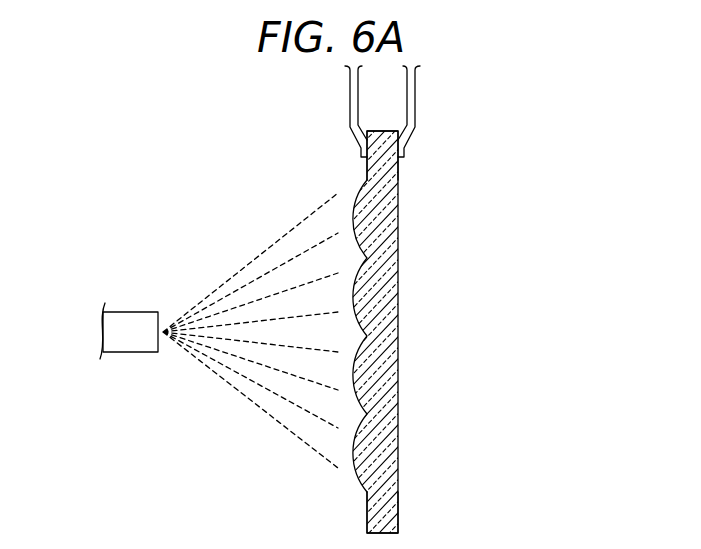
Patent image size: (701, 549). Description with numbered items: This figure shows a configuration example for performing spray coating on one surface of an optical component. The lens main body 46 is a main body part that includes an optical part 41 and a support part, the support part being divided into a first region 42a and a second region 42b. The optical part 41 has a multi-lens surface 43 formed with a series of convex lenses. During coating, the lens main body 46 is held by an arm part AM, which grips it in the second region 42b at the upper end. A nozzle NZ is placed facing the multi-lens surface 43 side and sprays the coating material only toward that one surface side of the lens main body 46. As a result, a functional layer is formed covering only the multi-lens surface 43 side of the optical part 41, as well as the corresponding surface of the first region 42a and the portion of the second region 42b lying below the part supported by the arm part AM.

The optical part 41 is at (390, 385).
The first region 42a is at (390, 513).
The second region 42b is at (387, 167).
The multi-lens surface 43 is at (354, 222).
The lens main body 46 is at (357, 182).
The arm part AM is at (357, 116).
The nozzle NZ is at (133, 316).